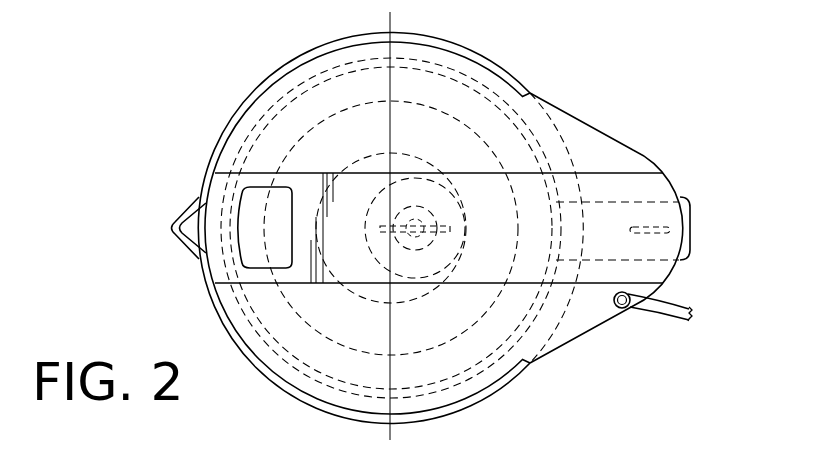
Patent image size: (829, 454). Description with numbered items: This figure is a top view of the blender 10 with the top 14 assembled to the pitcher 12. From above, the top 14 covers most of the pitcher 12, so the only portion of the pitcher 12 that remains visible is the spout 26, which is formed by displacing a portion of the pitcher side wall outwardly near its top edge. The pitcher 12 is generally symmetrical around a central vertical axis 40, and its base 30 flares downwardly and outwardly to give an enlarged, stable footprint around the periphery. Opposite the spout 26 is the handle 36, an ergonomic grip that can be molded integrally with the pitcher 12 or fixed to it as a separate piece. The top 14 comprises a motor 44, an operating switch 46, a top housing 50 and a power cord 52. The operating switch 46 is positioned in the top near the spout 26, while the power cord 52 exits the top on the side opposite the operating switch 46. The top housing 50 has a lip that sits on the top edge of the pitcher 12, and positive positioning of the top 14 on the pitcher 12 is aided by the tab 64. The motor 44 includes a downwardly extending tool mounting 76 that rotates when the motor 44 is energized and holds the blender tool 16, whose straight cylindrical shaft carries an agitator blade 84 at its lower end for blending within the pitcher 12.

The blender 10 is at (212, 115).
The pitcher 12 is at (263, 362).
The top 14 is at (536, 122).
The blender tool 16 is at (418, 284).
The spout 26 is at (178, 212).
The base 30 is at (297, 57).
The handle 36 is at (693, 215).
The central vertical axis 40 is at (394, 18).
The motor 44 is at (449, 190).
The operating switch 46 is at (243, 247).
The top housing 50 is at (603, 185).
The power cord 52 is at (666, 317).
The tab 64 is at (652, 235).
The tool mounting 76 is at (414, 185).
The agitator blade 84 is at (452, 233).